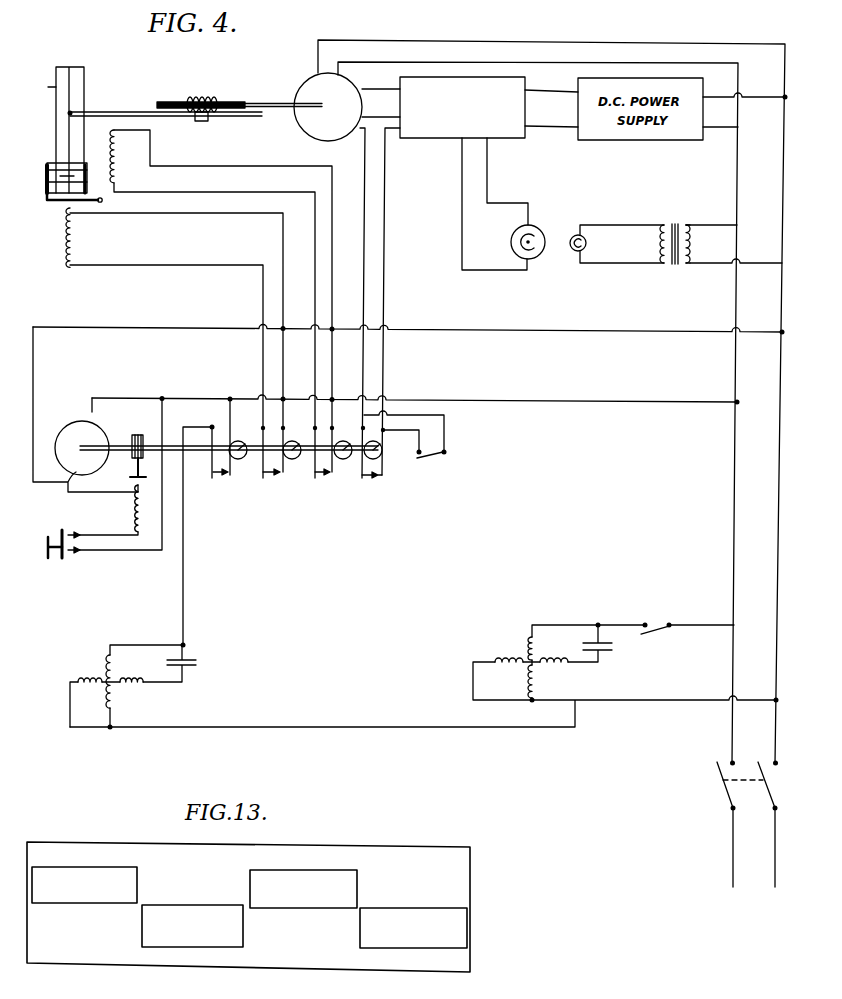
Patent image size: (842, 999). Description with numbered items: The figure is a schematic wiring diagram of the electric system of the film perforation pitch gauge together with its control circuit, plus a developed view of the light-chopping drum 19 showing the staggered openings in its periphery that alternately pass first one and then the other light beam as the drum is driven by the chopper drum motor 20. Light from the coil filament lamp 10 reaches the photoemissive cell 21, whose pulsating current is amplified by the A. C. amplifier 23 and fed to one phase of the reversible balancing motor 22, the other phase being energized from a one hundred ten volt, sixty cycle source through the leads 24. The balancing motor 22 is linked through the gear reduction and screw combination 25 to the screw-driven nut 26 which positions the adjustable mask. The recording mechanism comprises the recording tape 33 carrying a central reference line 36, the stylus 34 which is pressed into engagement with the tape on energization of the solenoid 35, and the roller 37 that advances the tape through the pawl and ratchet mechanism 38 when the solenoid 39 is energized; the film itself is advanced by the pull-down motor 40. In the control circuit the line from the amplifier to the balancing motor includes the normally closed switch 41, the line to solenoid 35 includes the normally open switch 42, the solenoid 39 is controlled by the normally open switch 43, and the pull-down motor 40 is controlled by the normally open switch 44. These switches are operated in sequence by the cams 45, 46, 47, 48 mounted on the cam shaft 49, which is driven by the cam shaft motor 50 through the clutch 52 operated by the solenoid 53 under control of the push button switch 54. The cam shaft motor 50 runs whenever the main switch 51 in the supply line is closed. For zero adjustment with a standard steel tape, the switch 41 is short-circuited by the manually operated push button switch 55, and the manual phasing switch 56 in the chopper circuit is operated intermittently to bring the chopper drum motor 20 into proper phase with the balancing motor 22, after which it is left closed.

In FIG. 4, the coil filament lamp 10 is at (572, 251).
In FIG. 13, the light-chopping drum 19 is at (398, 853).
In FIG. 4, the chopper drum motor 20 is at (530, 648).
In FIG. 4, the photoemissive cell 21 is at (541, 229).
In FIG. 4, the balancing motor 22 is at (310, 80).
In FIG. 4, the A. C. amplifier 23 is at (434, 138).
In FIG. 4, the leads 24 is at (549, 62).
In FIG. 4, the gear reduction and screw combination 25 is at (196, 98).
In FIG. 4, the screw-driven nut 26 is at (203, 121).
In FIG. 4, the recording tape 33 is at (84, 73).
In FIG. 4, the stylus 34 is at (72, 112).
In FIG. 4, the solenoid 35 is at (119, 170).
In FIG. 4, the reference line 36 is at (42, 89).
In FIG. 4, the roller 37 is at (58, 163).
In FIG. 4, the pawl and ratchet mechanism 38 is at (55, 203).
In FIG. 4, the solenoid 39 is at (67, 258).
In FIG. 4, the film pull-down motor 40 is at (107, 661).
In FIG. 4, the normally closed switch 41 is at (369, 486).
In FIG. 4, the normally open switch 42 is at (321, 484).
In FIG. 4, the normally open switch 43 is at (270, 484).
In FIG. 4, the normally open switch 44 is at (222, 484).
In FIG. 4, the cam 45 is at (381, 458).
In FIG. 4, the cam 46 is at (342, 462).
In FIG. 4, the cam 47 is at (291, 462).
In FIG. 4, the cam 48 is at (238, 462).
In FIG. 4, the cam shaft 49 is at (166, 446).
In FIG. 4, the cam shaft motor 50 is at (98, 438).
In FIG. 4, the main switch 51 is at (769, 786).
In FIG. 4, the clutch 52 is at (132, 456).
In FIG. 4, the solenoid 53 is at (133, 519).
In FIG. 4, the push button switch 54 is at (66, 554).
In FIG. 4, the push button switch 55 is at (440, 455).
In FIG. 4, the manual phasing switch 56 is at (651, 630).